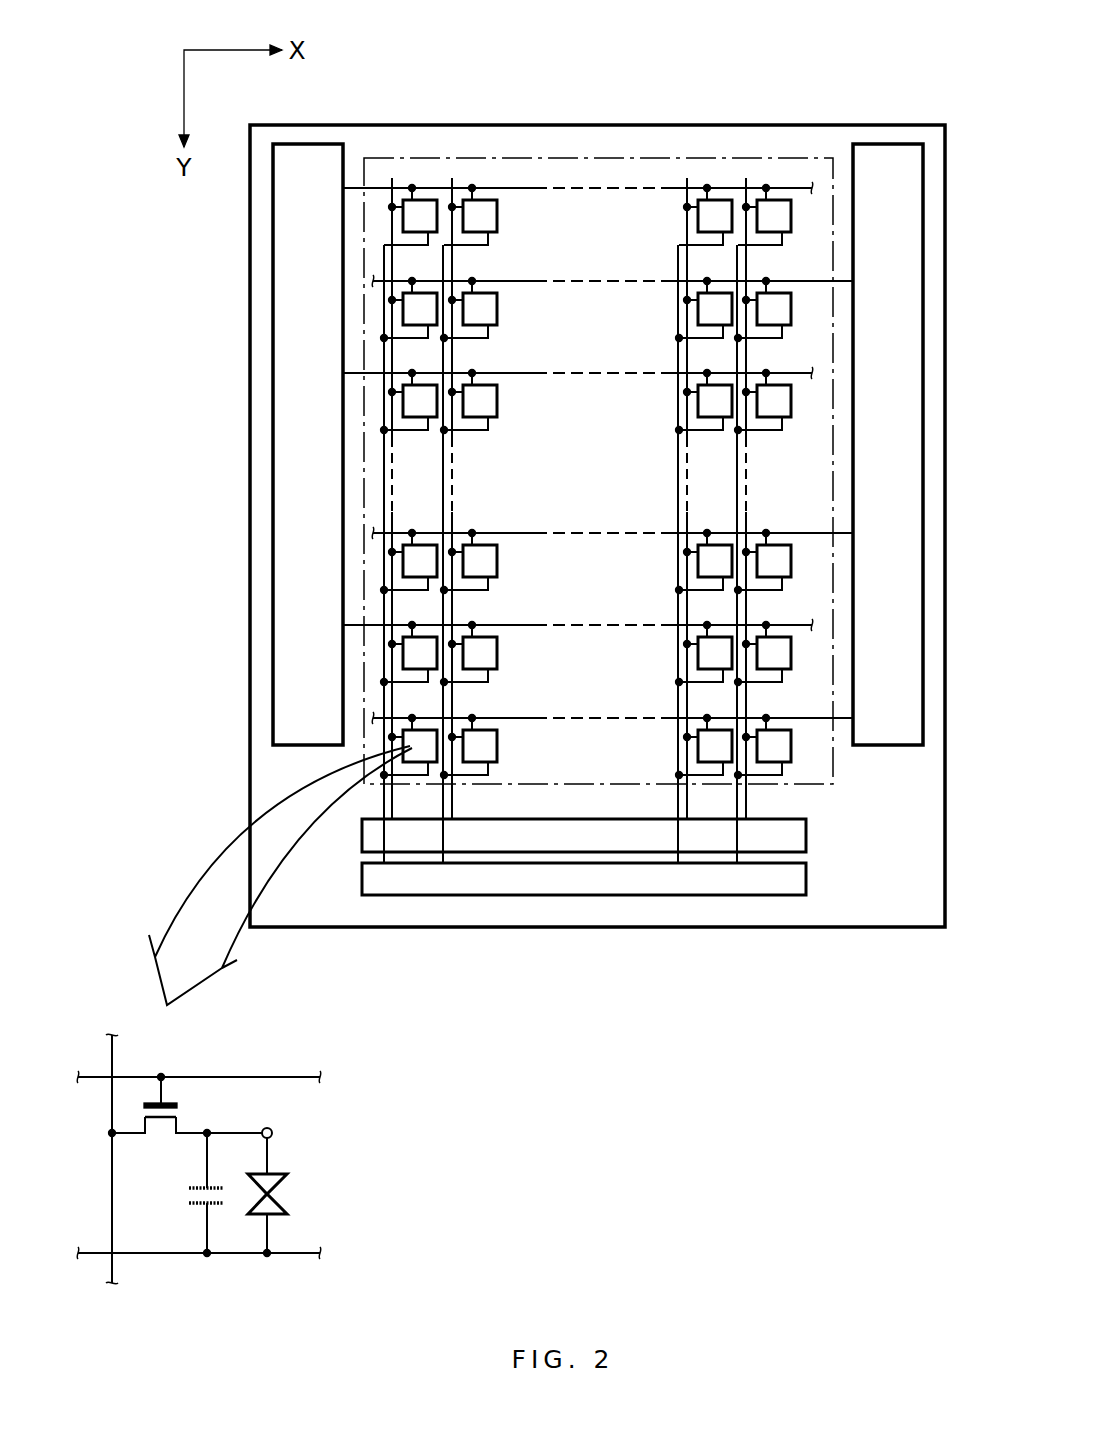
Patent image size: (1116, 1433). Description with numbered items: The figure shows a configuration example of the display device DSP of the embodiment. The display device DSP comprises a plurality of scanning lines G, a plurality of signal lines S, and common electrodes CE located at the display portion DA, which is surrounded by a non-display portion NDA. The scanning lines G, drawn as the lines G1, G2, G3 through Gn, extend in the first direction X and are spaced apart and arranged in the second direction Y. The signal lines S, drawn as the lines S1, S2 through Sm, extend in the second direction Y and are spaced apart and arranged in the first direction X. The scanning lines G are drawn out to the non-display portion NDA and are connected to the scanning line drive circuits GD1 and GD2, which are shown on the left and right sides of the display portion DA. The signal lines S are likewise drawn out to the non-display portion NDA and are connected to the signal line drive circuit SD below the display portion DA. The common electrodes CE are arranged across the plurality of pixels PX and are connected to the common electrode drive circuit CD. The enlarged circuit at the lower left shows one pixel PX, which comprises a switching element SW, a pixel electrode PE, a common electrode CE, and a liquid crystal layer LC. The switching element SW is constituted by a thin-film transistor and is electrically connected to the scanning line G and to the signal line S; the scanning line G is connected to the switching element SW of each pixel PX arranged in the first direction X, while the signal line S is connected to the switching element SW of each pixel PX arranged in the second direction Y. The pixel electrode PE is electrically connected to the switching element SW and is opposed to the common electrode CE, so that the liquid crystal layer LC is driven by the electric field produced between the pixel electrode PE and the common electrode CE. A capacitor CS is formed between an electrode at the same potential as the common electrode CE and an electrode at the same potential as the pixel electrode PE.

The display device DSP is at (924, 60).
The scanning line drive circuit GD1 is at (307, 144).
The scanning line drive circuit GD2 is at (900, 144).
The signal line drive circuit SD is at (637, 853).
The common electrode drive circuit CD is at (688, 880).
The display portion DA is at (580, 174).
The non-display portion NDA is at (679, 149).
The scanning line G1 is at (670, 184).
The scanning line G2 is at (668, 279).
The scanning line G3 is at (668, 371).
The scanning line Gn is at (668, 717).
The signal line S1 is at (398, 174).
The signal line S2 is at (458, 174).
The signal line Sm is at (752, 174).
The pixel PX is at (496, 213).
The common electrode CE is at (384, 462).
The scanning line G is at (112, 1075).
The signal line S is at (112, 1190).
The switching element SW is at (194, 1117).
The pixel electrode PE is at (273, 1133).
The capacitor CS is at (184, 1188).
The liquid crystal layer LC is at (293, 1193).